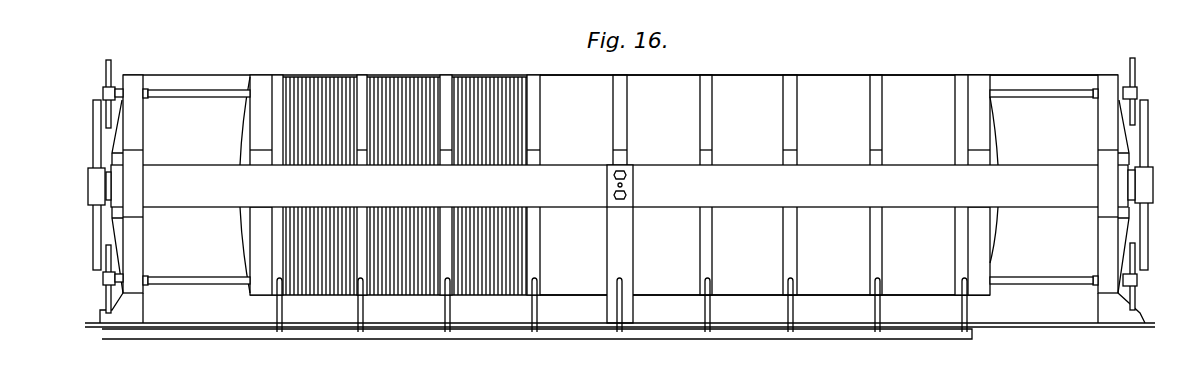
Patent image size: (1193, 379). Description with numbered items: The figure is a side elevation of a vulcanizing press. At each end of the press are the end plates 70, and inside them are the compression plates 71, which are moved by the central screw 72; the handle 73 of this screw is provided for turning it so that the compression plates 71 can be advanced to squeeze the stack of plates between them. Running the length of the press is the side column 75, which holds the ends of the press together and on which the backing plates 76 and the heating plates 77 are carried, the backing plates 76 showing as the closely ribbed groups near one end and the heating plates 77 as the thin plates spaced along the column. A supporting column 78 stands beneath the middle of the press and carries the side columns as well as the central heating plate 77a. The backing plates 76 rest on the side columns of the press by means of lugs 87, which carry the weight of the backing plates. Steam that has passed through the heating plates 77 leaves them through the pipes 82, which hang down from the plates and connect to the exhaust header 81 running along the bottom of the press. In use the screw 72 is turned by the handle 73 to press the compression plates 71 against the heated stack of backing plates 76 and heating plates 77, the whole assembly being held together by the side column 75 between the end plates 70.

The end plates 70 is at (132, 82).
The compression plates 71 is at (262, 90).
The central screw 72 is at (1145, 193).
The handle 73 is at (95, 143).
The side column 75 is at (619, 186).
The backing plates 76 is at (426, 108).
The heating plates 77 is at (448, 80).
The central heating plate 77a is at (620, 87).
The supporting column 78 is at (622, 217).
The exhaust header 81 is at (947, 333).
The pipes 82 is at (792, 312).
The lugs 87 is at (705, 158).